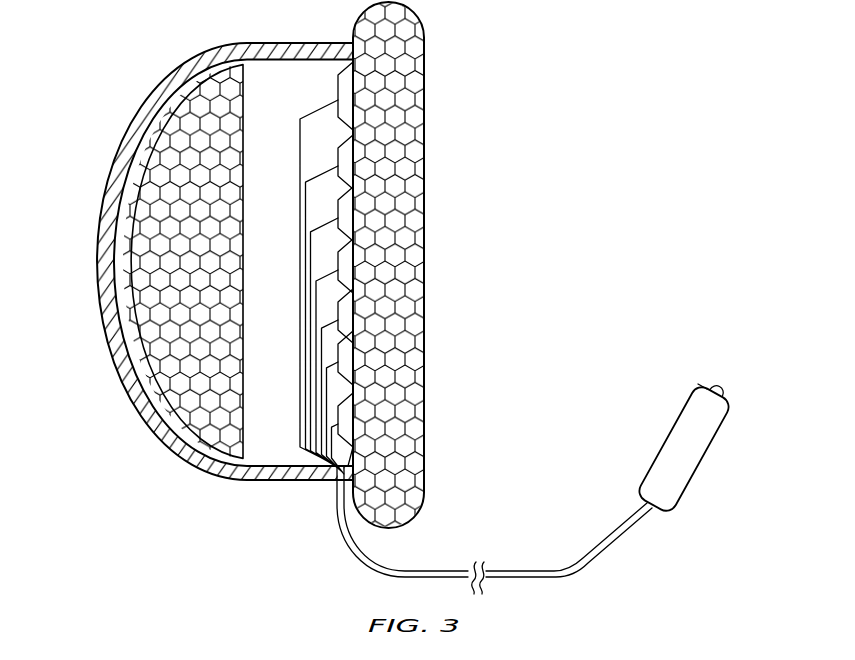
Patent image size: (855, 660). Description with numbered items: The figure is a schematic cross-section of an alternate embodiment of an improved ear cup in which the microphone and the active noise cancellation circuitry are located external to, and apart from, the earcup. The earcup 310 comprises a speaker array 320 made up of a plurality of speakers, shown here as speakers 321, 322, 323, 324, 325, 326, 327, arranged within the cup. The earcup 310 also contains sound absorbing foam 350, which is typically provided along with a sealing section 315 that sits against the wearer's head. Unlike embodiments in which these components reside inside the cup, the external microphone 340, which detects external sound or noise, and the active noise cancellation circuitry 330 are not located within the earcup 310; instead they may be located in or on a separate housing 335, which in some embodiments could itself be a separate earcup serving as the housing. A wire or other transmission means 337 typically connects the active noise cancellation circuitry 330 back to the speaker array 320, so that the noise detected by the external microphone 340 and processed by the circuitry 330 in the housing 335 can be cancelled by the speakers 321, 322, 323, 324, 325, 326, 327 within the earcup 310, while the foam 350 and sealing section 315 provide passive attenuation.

The earcup 310 is at (150, 79).
The sealing section 315 is at (423, 28).
The speaker array 320 is at (331, 67).
The speaker 321 is at (346, 95).
The speaker 322 is at (346, 419).
The speaker 323 is at (346, 161).
The speaker 324 is at (346, 213).
The speaker 325 is at (346, 265).
The speaker 326 is at (346, 315).
The speaker 327 is at (346, 357).
The active noise cancellation circuitry 330 is at (682, 446).
The separate housing 335 is at (701, 385).
The wire or other transmission means 337 is at (548, 580).
The external microphone 340 is at (722, 382).
The sound absorbing foam 350 is at (131, 249).